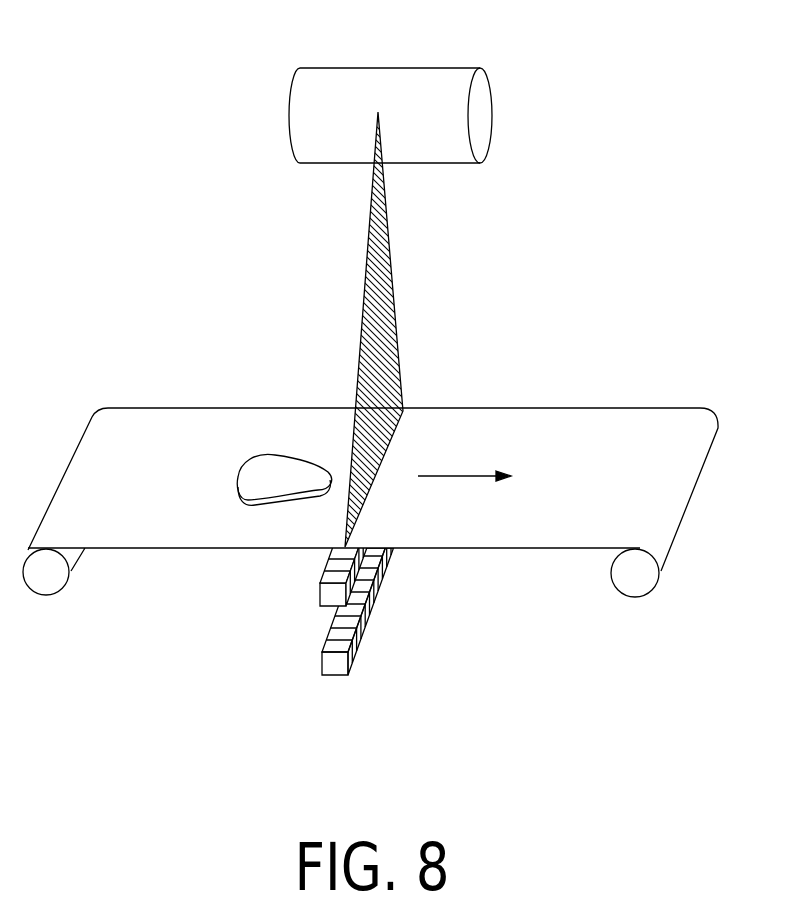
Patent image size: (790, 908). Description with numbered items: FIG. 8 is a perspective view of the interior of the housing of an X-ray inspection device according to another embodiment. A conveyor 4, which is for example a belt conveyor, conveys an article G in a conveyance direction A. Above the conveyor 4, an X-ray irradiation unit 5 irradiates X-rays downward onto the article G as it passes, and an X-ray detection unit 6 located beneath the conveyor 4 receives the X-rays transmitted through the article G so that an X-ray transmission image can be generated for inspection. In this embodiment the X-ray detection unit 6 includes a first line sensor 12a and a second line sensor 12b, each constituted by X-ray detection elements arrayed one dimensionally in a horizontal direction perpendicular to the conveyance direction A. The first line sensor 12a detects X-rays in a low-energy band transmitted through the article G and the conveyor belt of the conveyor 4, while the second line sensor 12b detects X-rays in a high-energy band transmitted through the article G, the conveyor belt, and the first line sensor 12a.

The X-ray irradiation unit 5 is at (439, 78).
The conveyor 4 is at (150, 427).
The article G is at (290, 468).
The conveyance direction A is at (462, 475).
The X-ray detection unit 6 is at (348, 660).
The first line sensor 12a is at (327, 562).
The second line sensor 12b is at (377, 615).